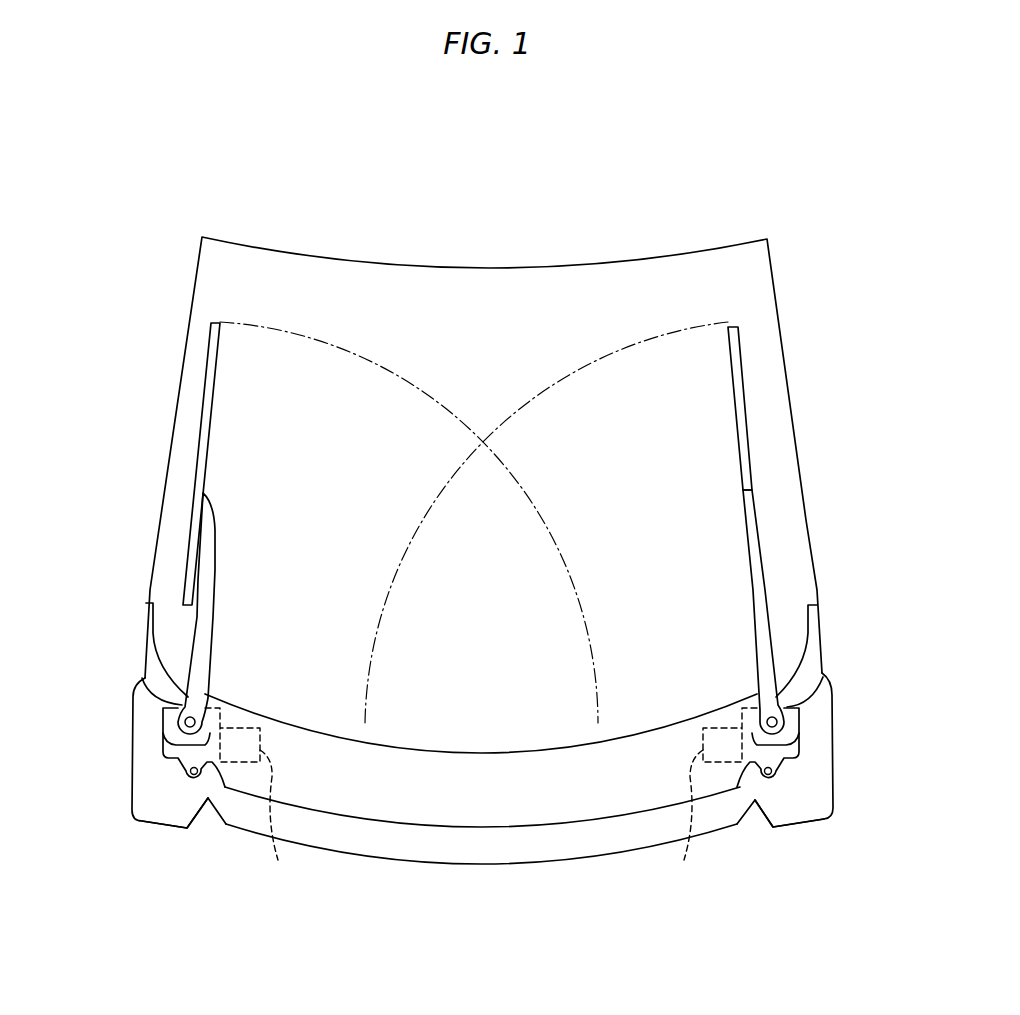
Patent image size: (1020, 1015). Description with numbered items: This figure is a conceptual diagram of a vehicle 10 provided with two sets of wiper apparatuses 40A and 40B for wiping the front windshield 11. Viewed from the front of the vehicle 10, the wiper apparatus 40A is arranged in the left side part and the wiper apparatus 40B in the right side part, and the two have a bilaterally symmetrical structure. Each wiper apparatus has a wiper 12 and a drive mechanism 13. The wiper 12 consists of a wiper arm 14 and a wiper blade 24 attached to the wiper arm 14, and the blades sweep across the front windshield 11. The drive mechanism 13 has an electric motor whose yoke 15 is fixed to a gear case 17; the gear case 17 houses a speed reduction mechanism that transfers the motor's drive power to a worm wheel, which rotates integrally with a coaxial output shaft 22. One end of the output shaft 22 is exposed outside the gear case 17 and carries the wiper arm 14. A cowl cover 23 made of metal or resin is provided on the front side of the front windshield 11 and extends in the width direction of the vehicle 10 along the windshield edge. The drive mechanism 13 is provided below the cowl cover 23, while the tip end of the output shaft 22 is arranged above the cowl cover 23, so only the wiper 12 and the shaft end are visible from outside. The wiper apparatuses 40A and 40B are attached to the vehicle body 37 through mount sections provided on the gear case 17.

The vehicle 10 is at (264, 153).
The front windshield 11 is at (445, 290).
The wiper 12 is at (176, 477).
The drive mechanism 13 is at (141, 722).
The wiper arm 14 is at (203, 640).
The yoke 15 is at (481, 803).
The gear case 17 is at (162, 745).
The output shaft 22 is at (180, 697).
The cowl cover 23 is at (463, 800).
The wiper blade 24 is at (210, 380).
The vehicle body 37 is at (357, 868).
The wiper apparatus 40A is at (171, 797).
The wiper apparatus 40B is at (793, 800).